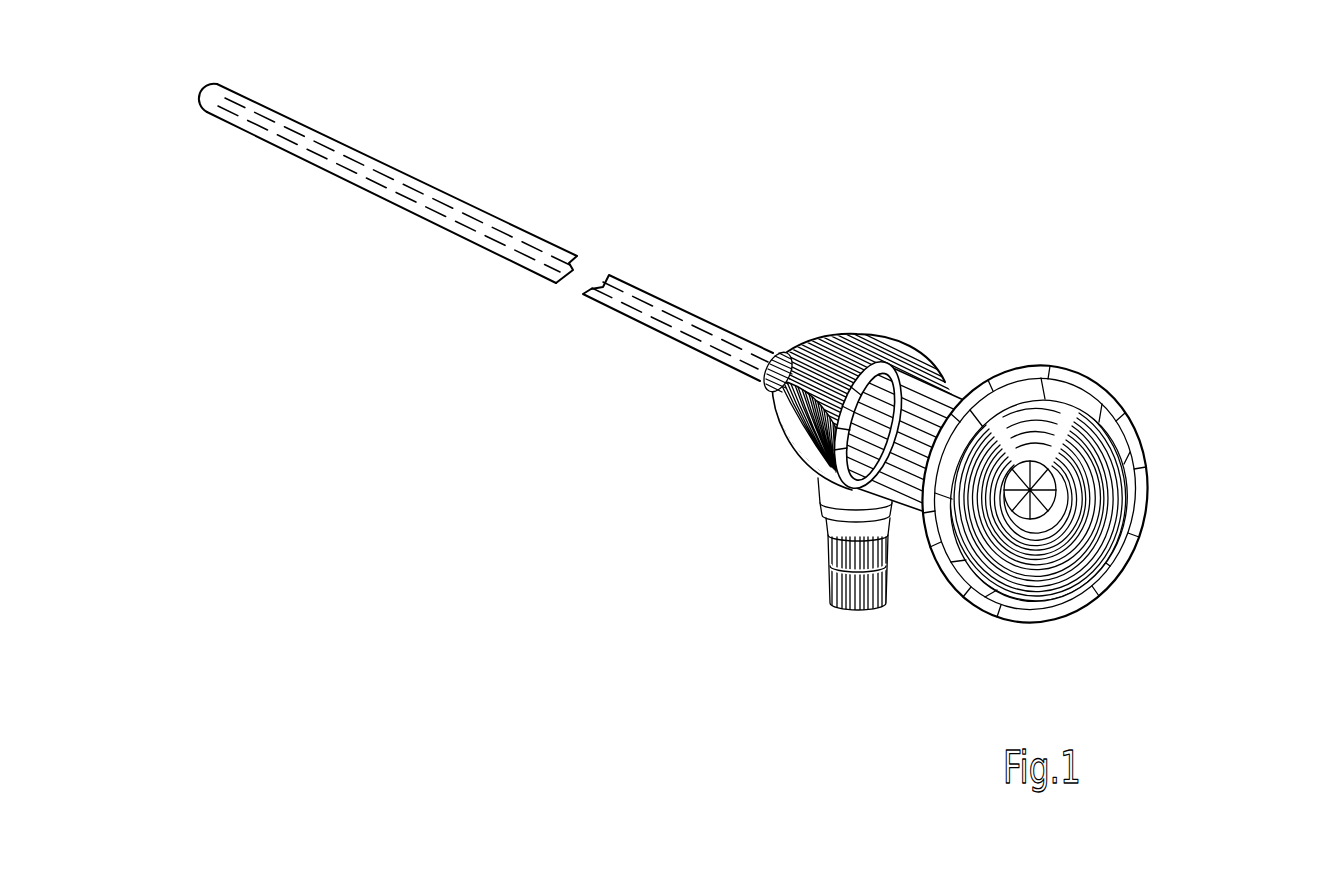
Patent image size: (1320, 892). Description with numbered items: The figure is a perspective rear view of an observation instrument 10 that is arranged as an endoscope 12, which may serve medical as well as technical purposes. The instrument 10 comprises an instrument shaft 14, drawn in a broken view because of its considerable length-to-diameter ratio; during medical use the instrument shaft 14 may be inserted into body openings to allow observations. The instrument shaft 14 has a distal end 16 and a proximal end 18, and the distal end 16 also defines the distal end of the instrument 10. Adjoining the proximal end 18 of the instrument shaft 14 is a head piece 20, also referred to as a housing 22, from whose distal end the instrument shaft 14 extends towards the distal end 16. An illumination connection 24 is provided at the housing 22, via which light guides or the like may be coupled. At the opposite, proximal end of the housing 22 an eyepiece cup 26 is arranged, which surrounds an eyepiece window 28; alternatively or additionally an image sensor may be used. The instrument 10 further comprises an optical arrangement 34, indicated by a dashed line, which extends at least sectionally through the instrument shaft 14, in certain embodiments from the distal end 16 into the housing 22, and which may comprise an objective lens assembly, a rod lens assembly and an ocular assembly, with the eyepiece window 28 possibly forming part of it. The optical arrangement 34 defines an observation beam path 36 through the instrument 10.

The observation instrument 10 is at (700, 399).
The endoscope 12 is at (450, 348).
The instrument shaft 14 is at (450, 229).
The distal end 16 is at (217, 117).
The proximal end 18 is at (760, 343).
The head piece 20 is at (1047, 449).
The housing 22 is at (905, 405).
The illumination connection 24 is at (853, 583).
The eyepiece cup 26 is at (1120, 419).
The eyepiece window 28 is at (1117, 553).
The optical arrangement 34 is at (428, 222).
The observation beam path 36 is at (540, 243).